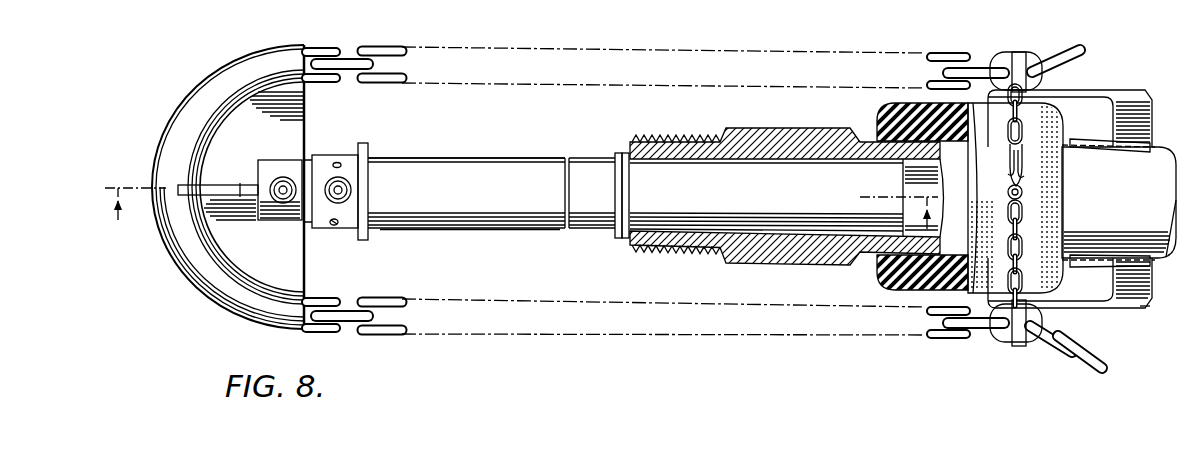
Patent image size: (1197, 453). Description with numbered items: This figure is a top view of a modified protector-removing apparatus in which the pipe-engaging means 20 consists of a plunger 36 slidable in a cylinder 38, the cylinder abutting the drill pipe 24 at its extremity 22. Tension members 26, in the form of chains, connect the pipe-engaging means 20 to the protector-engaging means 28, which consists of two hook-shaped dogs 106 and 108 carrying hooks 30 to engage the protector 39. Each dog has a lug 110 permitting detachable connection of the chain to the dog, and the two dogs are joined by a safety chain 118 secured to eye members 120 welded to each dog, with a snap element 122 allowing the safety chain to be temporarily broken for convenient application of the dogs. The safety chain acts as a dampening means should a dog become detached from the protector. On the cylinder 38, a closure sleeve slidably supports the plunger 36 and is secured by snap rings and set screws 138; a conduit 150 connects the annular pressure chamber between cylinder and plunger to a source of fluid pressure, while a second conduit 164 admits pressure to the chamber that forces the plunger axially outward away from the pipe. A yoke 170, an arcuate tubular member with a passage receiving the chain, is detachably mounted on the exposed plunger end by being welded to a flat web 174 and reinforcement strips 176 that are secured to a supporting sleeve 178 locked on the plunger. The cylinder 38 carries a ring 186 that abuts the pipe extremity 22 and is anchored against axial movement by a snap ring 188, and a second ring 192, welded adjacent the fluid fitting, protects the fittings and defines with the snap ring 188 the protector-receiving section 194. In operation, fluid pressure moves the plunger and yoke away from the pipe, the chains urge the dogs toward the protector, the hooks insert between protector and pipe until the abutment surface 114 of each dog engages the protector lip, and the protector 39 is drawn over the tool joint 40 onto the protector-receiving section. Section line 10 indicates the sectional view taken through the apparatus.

The section line 10- 10 is at (522, 202).
The pipe-engaging means 20 is at (460, 157).
The extremity of the drill pipe 22 is at (631, 142).
The drill pipe 24 is at (1162, 148).
The tension members 26 is at (377, 51).
The protector-engaging means 28 is at (1142, 324).
The hooks 30 is at (1096, 139).
The plunger 36 is at (312, 160).
The cylinder 38 is at (518, 158).
The protector 39 is at (882, 118).
The tool joint 40 is at (793, 128).
The hook-shaped dog 106 is at (1118, 92).
The hook-shaped dog 108 is at (1150, 296).
The lug 110 is at (1021, 52).
The abutment surface 114 is at (1108, 284).
The safety chain 118 is at (1024, 233).
The eye members 120 is at (1000, 340).
The snap element 122 is at (1024, 172).
The set screws 138 is at (334, 228).
The conduit 150 is at (351, 190).
The second conduit 164 is at (282, 205).
The yoke 170 is at (200, 278).
The flat web 174 is at (288, 270).
The reinforcement strips 176 is at (258, 202).
The supporting sleeve 178 is at (274, 161).
The ring 186 is at (618, 240).
The snap ring 188 is at (630, 187).
The second ring 192 is at (368, 237).
The protector-receiving section 194 is at (492, 230).